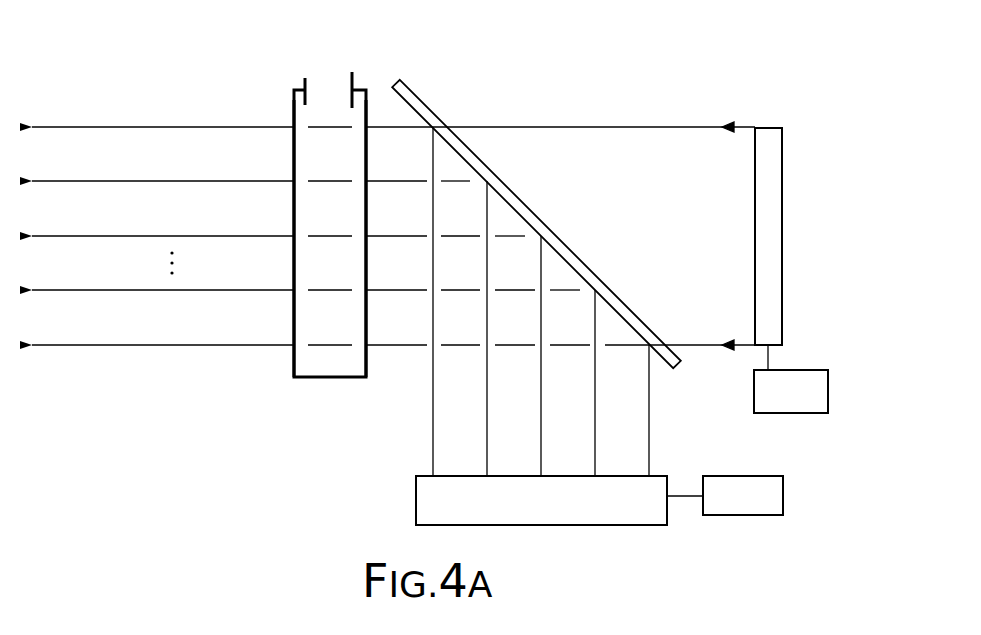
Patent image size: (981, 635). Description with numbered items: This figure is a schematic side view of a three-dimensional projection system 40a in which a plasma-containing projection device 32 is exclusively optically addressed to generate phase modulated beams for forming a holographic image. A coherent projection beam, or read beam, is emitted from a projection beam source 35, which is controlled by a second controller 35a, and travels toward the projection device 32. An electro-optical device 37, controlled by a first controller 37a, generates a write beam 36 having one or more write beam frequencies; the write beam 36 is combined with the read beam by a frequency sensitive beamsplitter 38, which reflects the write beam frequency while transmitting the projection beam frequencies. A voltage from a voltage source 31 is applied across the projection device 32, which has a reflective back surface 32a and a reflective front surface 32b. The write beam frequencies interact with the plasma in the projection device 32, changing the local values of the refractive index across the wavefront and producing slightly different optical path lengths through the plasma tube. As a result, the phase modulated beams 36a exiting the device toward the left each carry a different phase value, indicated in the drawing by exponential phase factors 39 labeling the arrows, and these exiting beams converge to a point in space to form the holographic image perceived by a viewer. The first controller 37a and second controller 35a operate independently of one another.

The voltage source 31 is at (323, 80).
The plasma-containing projection device 32 is at (366, 98).
The reflective back surface 32a is at (366, 358).
The reflective front surface 32b is at (294, 362).
The projection beam source 35 is at (782, 248).
The second controller 35a is at (810, 405).
The write beam 36 is at (433, 419).
The phase modulated beams 36a is at (95, 127).
The electro-optical device 37 is at (554, 512).
The first controller 37a is at (762, 509).
The frequency sensitive beamsplitter 38 is at (560, 237).
The phase-shifted output beams 39 is at (42, 68).
The plasma-containing projection device system 40a is at (650, 83).